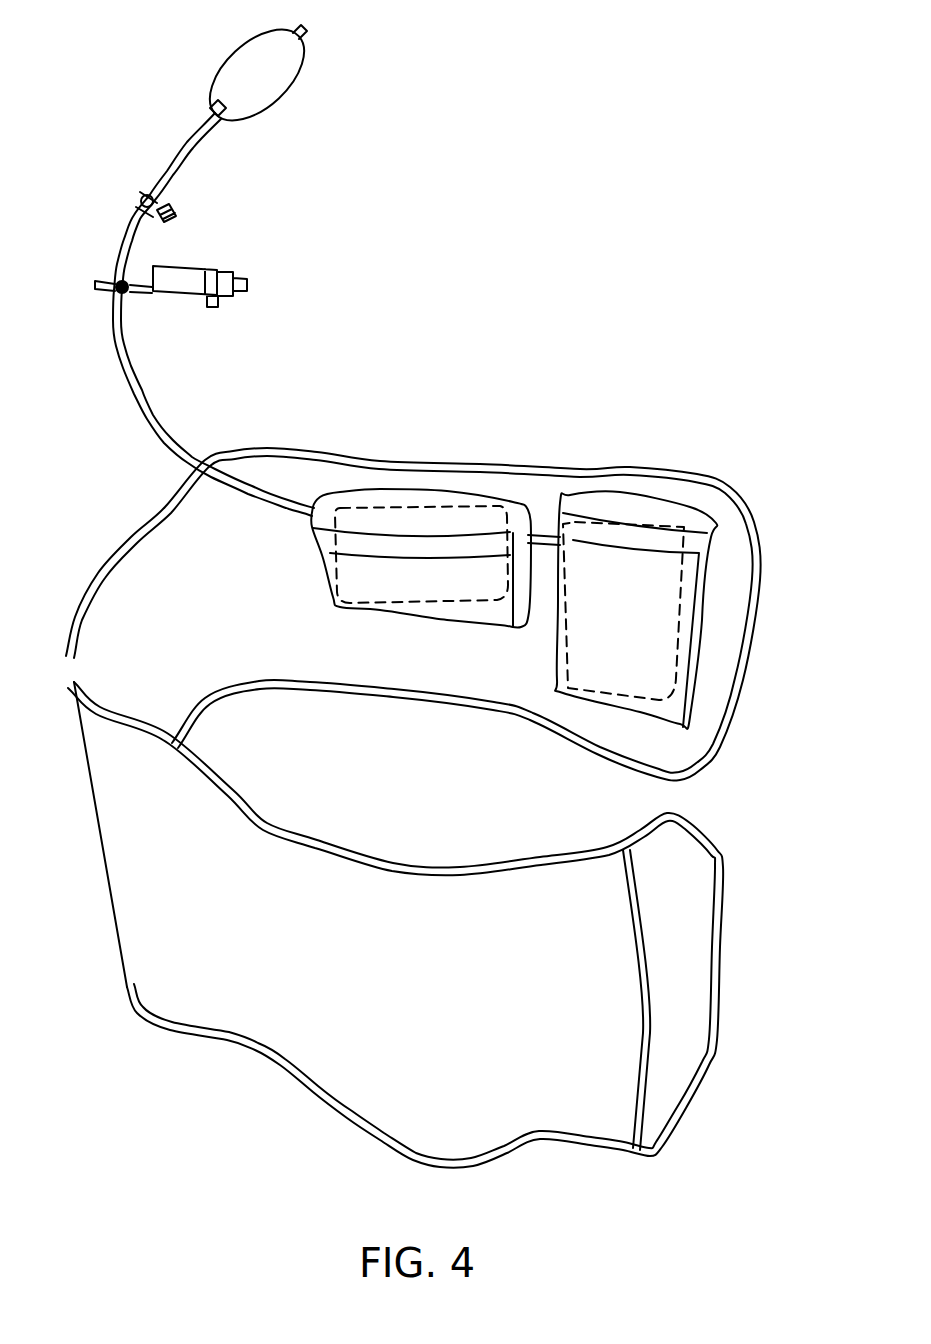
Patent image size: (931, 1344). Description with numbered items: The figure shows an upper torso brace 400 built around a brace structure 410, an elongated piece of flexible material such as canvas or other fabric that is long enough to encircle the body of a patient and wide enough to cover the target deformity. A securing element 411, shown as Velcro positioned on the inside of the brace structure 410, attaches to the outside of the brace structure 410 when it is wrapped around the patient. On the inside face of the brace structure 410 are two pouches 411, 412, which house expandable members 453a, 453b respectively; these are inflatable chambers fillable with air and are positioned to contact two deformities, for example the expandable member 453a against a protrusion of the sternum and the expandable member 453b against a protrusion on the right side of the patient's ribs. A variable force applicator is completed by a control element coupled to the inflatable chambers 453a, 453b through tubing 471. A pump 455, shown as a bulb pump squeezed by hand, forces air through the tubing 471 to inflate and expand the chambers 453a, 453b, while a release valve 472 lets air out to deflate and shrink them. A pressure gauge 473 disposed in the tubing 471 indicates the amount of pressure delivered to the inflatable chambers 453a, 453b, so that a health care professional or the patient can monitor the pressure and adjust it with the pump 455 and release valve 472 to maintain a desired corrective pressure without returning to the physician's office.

The upper torso brace 400 is at (641, 82).
The brace structure 410 is at (115, 590).
The securing element 411 is at (350, 493).
The pouch 412 is at (602, 493).
The expandable member 453a is at (434, 510).
The expandable member 453b is at (675, 520).
The pump 455 is at (247, 57).
The tubing 471 is at (123, 360).
The release valve 472 is at (170, 217).
The pressure gauge 473 is at (180, 287).